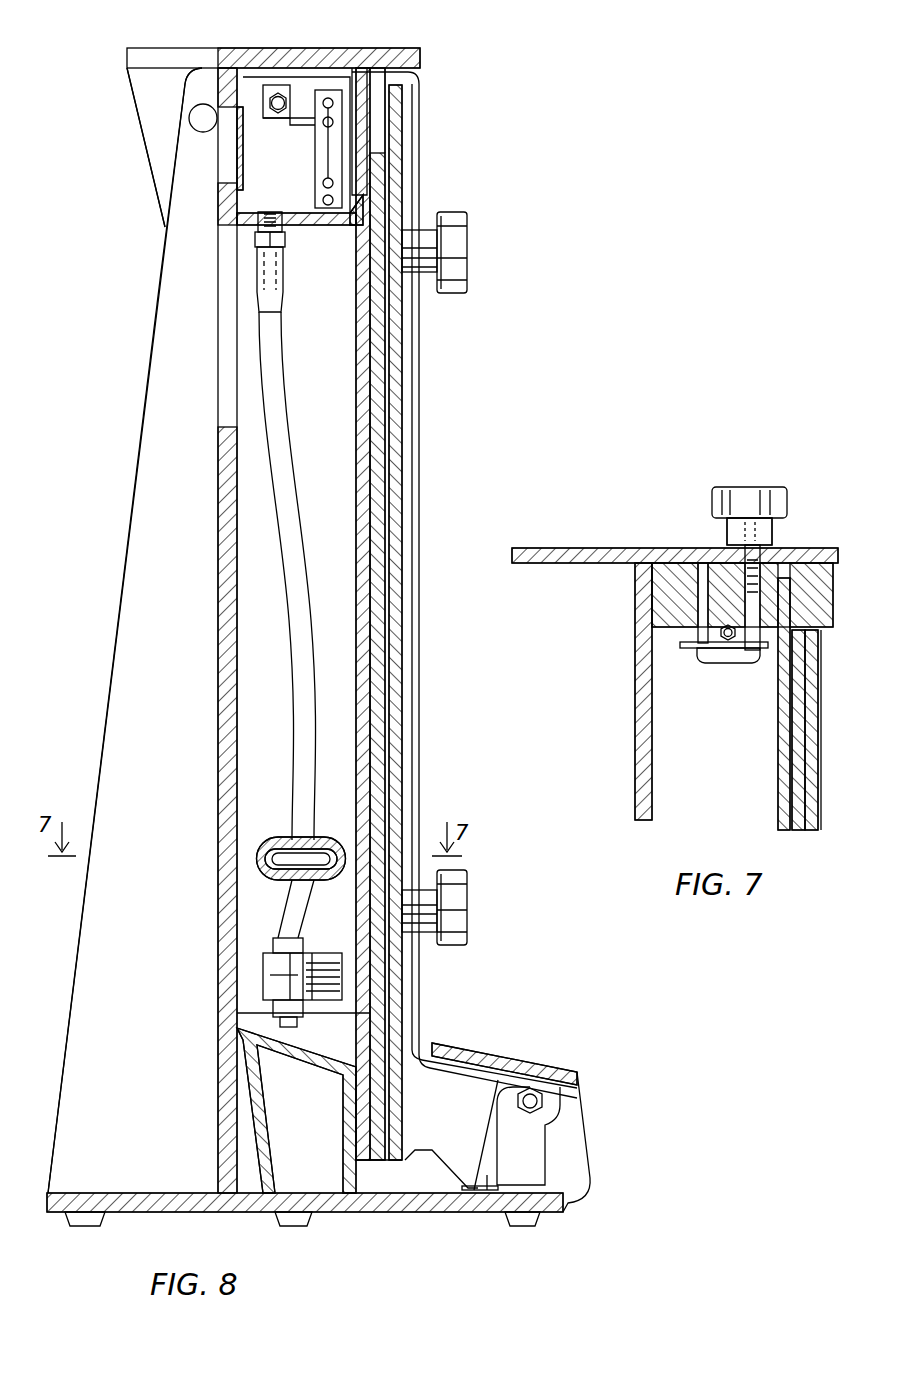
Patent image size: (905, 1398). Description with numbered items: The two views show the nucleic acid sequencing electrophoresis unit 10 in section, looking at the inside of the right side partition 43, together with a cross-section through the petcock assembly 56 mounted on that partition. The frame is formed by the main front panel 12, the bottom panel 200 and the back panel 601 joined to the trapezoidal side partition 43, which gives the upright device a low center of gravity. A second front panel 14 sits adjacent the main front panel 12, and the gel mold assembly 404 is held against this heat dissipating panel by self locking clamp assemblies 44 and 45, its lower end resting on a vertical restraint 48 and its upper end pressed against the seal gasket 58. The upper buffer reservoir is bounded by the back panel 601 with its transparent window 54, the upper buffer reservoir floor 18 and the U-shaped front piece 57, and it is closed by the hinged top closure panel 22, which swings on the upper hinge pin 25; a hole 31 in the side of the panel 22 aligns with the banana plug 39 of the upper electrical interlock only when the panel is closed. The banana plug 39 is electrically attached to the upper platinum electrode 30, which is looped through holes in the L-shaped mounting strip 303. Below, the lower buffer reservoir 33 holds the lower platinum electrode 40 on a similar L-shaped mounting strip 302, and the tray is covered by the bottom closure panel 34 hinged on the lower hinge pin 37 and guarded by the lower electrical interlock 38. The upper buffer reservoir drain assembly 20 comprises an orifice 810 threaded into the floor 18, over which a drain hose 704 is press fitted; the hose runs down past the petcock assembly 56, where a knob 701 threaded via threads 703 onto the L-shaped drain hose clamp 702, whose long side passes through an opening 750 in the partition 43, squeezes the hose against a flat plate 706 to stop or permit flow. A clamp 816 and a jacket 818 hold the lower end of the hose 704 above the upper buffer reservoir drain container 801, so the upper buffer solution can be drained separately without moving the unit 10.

In FIG. 8, the electrophoresis unit 10 is at (160, 254).
In FIG. 7, the main front panel 12 is at (833, 606).
In FIG. 8, the second front panel 14 is at (357, 322).
In FIG. 8, the upper buffer reservoir floor 18 is at (299, 212).
In FIG. 8, the upper buffer reservoir drain assembly 20 is at (283, 398).
In FIG. 8, the hinged top closure panel 22 is at (170, 96).
In FIG. 8, the upper hinge pin 25 is at (190, 120).
In FIG. 8, the upper platinum electrode 30 is at (313, 152).
In FIG. 8, the hole 31 is at (262, 102).
In FIG. 8, the lower buffer reservoir 33 is at (440, 1096).
In FIG. 8, the bottom closure panel 34 is at (505, 1056).
In FIG. 8, the lower hinge pin 37 is at (566, 1140).
In FIG. 8, the lower electrical interlock 38 is at (533, 1118).
In FIG. 8, the banana plug 39 is at (287, 88).
In FIG. 8, the lower platinum electrode 40 is at (488, 1190).
In FIG. 8, the right side partition 43 is at (158, 977).
In FIG. 7, the right side partition 43 is at (578, 548).
In FIG. 8, the self locking clamp assembly 44 is at (450, 212).
In FIG. 8, the self locking clamp assembly 45 is at (465, 872).
In FIG. 8, the vertical restraint 48 is at (445, 1150).
In FIG. 8, the transparent window 54 is at (237, 160).
In FIG. 8, the petcock assembly 56 is at (322, 838).
In FIG. 7, the petcock assembly 56 is at (726, 540).
In FIG. 8, the U-shaped front piece 57 is at (368, 82).
In FIG. 8, the seal gasket 58 is at (358, 222).
In FIG. 8, the bottom panel 200 is at (392, 1213).
In FIG. 8, the L-shaped mounting strip 302 is at (467, 1185).
In FIG. 8, the L-shaped mounting strip 303 is at (312, 183).
In FIG. 8, the gel mold assembly 404 is at (412, 386).
In FIG. 7, the gel mold assembly 404 is at (819, 724).
In FIG. 8, the back panel 601 is at (218, 438).
In FIG. 7, the knob 701 is at (785, 490).
In FIG. 7, the L-shaped drain hose clamp 702 is at (680, 645).
In FIG. 7, the threads 703 is at (768, 548).
In FIG. 8, the drain hose 704 is at (285, 574).
In FIG. 7, the drain hose 704 is at (726, 652).
In FIG. 7, the flat plate 706 is at (748, 664).
In FIG. 7, the opening 750 is at (700, 560).
In FIG. 8, the upper buffer reservoir drain container 801 is at (320, 1101).
In FIG. 8, the orifice 810 is at (283, 242).
In FIG. 8, the clamp 816 is at (320, 960).
In FIG. 8, the jacket 818 is at (272, 942).